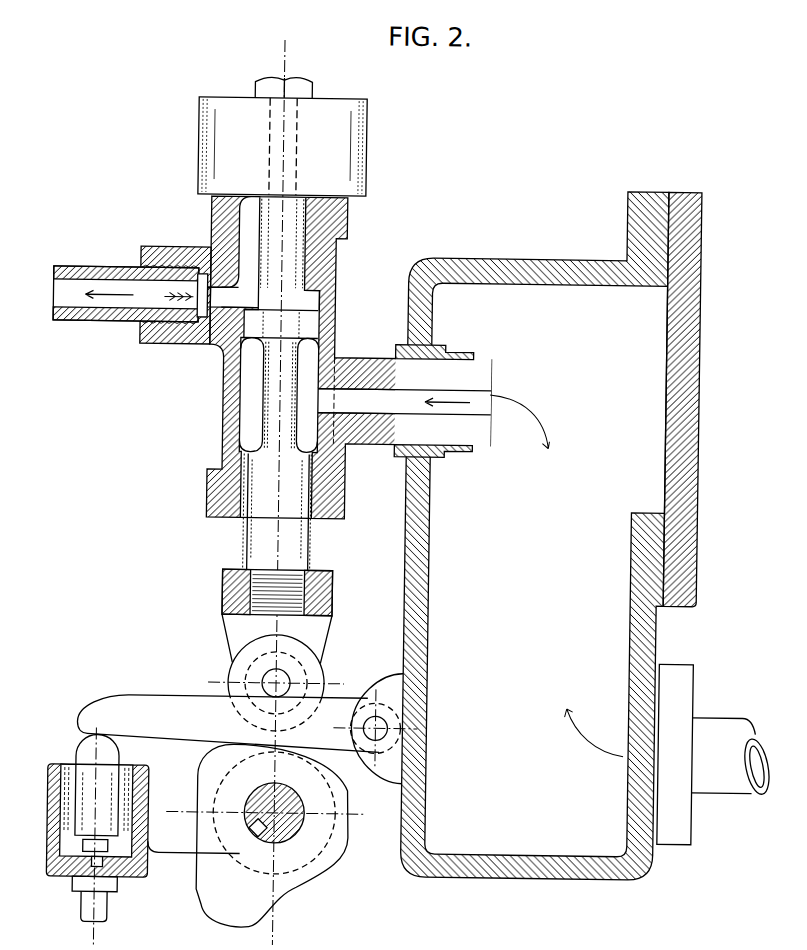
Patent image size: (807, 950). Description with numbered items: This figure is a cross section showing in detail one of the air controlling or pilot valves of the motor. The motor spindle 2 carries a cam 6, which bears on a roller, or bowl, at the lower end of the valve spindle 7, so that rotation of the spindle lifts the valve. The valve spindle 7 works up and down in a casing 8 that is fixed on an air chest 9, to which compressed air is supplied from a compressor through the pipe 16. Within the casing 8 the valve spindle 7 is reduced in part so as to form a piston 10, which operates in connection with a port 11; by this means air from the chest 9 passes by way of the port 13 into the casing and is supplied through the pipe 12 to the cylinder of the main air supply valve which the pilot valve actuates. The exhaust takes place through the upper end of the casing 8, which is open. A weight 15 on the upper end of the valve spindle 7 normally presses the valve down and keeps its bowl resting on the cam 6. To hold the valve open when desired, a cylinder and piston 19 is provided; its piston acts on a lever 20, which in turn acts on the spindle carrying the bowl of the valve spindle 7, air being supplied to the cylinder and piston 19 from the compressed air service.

The spindle 2 is at (289, 817).
The cam 6 is at (214, 872).
The valve spindle 7 is at (265, 240).
The casing 8 is at (325, 258).
The air chest 9 is at (516, 534).
The piston 10 is at (295, 323).
The port 11 is at (308, 297).
The pipe 12 is at (84, 290).
The port 13 is at (477, 397).
The weight 15 is at (283, 136).
The pipe 16 is at (716, 722).
The cylinder and piston 19 is at (81, 795).
The lever 20 is at (167, 706).